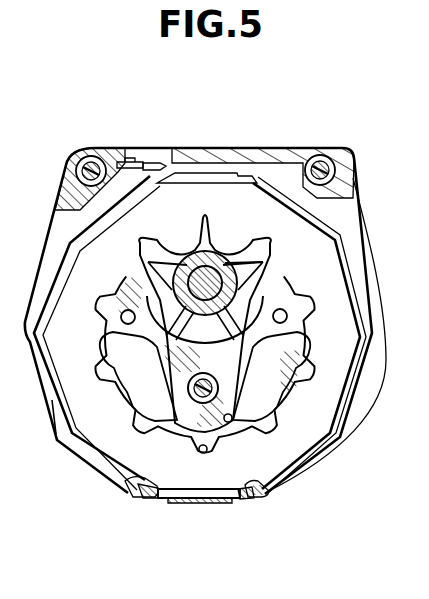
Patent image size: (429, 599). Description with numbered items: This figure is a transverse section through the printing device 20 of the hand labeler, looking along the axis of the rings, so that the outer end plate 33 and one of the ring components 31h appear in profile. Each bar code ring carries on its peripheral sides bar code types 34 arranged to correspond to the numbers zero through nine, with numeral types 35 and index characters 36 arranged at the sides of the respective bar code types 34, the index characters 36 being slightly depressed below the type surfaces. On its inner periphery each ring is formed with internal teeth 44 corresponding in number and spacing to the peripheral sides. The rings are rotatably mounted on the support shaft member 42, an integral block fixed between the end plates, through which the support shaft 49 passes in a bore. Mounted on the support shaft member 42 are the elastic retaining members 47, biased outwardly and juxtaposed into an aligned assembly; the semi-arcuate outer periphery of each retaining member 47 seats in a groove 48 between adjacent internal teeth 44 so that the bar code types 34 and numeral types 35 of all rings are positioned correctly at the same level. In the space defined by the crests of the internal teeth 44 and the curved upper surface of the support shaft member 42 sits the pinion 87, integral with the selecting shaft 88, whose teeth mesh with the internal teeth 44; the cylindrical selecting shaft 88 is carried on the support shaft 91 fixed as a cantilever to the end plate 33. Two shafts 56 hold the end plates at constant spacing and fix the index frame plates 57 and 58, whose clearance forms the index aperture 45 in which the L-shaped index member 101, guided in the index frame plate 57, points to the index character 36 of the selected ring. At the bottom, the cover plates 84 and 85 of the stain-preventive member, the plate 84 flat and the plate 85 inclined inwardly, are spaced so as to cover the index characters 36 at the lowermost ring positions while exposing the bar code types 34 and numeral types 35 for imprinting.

The printing device 20 is at (343, 126).
The ring component 31h is at (328, 265).
The end plate 33 is at (364, 397).
The bar code types 34 is at (221, 500).
The numeral types 35 is at (170, 504).
The index characters 36 is at (130, 492).
The support shaft member 42 is at (135, 280).
The internal teeth 44 is at (232, 424).
The index aperture 45 is at (158, 158).
The elastic retaining members 47 is at (300, 357).
The grooves 48 is at (206, 453).
The support shaft 49 is at (190, 405).
The shafts 56 is at (95, 150).
The index frame plate 57 is at (66, 188).
The index frame plate 58 is at (263, 152).
The cover plate 84 is at (249, 500).
The cover plate 85 is at (148, 499).
The pinion 87 is at (245, 266).
The selecting shaft 88 is at (272, 267).
The support shaft 91 is at (196, 272).
The index member 101 is at (137, 156).